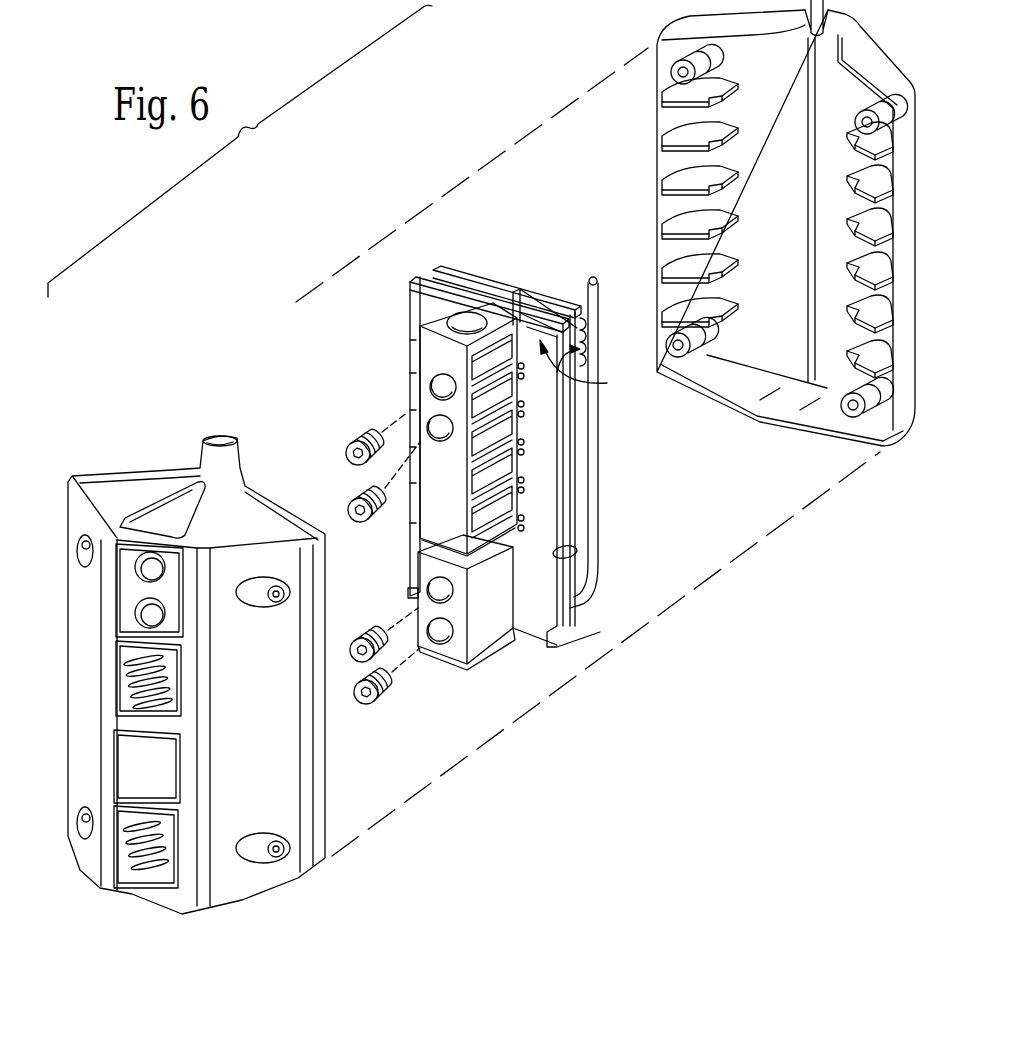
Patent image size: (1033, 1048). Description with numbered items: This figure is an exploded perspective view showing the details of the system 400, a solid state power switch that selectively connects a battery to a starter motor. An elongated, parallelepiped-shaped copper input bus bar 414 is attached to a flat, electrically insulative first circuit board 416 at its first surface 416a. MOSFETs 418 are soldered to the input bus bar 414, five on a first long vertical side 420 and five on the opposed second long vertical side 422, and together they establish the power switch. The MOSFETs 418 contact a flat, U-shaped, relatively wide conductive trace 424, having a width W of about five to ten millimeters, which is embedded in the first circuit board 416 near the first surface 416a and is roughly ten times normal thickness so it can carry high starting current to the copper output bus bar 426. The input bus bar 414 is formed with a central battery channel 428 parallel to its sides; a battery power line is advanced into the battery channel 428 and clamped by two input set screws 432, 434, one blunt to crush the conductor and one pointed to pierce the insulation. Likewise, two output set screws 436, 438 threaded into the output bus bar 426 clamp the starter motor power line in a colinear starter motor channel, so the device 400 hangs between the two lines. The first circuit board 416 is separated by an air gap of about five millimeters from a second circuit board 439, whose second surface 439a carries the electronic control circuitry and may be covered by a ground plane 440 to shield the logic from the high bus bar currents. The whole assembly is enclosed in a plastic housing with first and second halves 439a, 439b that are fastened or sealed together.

The system 400 is at (372, 178).
The input bus bar 414 is at (434, 389).
The first circuit board 416 is at (497, 306).
The first surface 416a is at (523, 322).
The MOSFETs 418 is at (502, 367).
The first long vertical side 420 is at (485, 549).
The second long vertical side 422 is at (428, 386).
The trace 424 is at (550, 447).
The output bus bar 426 is at (507, 615).
The battery channel 428 is at (478, 318).
The input set screw 432 is at (346, 452).
The input set screw 434 is at (380, 520).
The output set screw 436 is at (366, 636).
The output set screw 438 is at (393, 682).
The second circuit board 439 is at (568, 551).
The second surface 439a is at (278, 710).
The second housing half 439b is at (800, 123).
The ground plane 440 is at (520, 312).
The width W is at (585, 372).